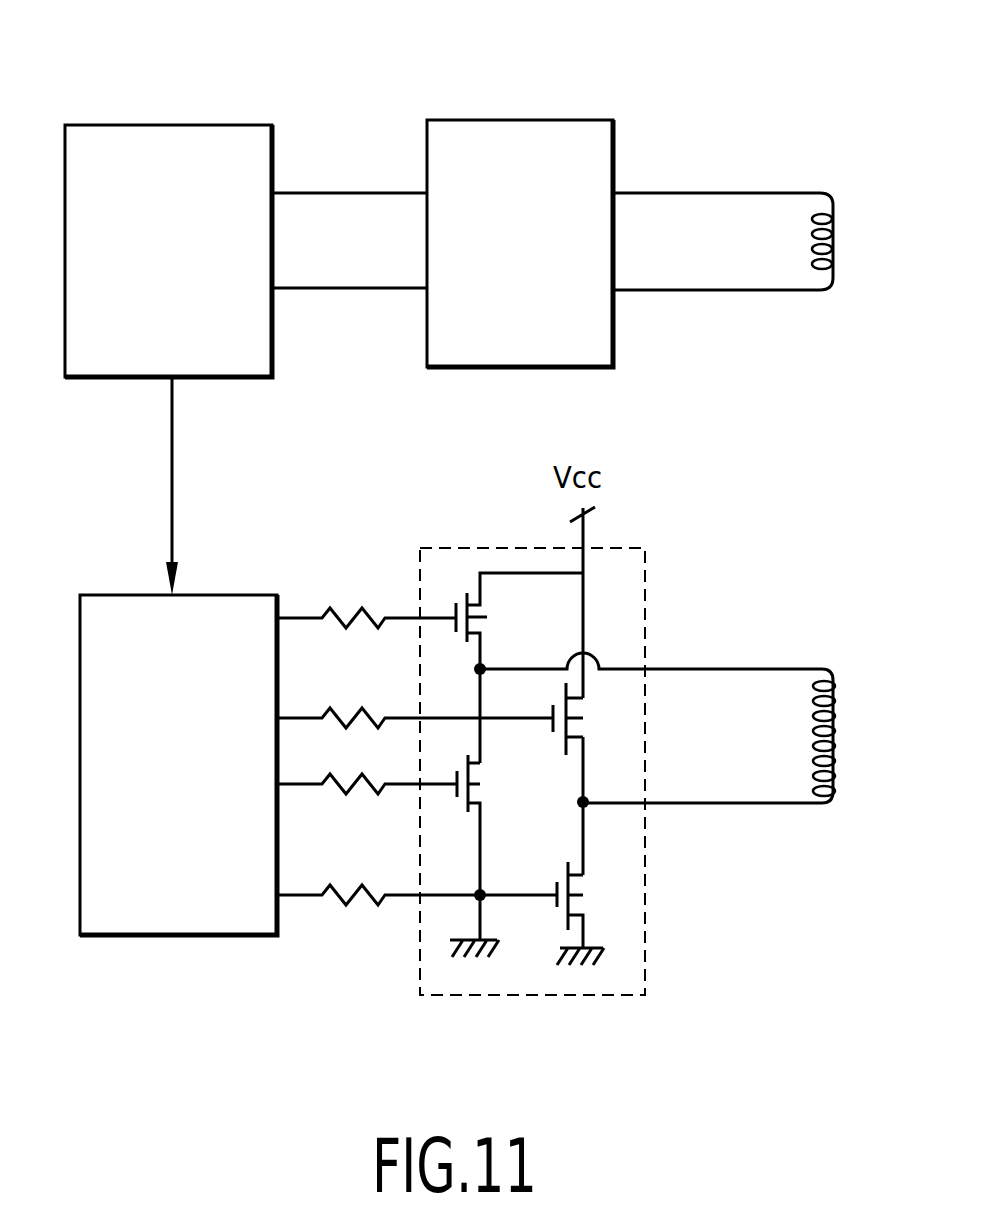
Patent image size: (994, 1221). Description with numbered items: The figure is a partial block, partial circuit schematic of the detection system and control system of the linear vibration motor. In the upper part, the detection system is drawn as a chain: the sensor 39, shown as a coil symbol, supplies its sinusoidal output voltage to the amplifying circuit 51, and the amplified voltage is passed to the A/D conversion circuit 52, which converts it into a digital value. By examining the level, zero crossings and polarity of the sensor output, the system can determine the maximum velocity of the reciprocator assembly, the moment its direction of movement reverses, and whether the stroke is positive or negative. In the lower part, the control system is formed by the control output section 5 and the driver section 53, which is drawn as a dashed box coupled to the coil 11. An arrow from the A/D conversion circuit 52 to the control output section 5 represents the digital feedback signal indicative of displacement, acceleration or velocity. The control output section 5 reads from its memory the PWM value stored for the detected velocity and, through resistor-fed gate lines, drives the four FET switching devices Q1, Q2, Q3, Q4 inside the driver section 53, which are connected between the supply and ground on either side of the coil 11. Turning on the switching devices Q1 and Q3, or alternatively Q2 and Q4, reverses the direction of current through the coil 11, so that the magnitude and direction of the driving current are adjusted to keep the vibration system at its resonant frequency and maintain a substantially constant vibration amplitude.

The A/D conversion circuit 52 is at (142, 125).
The amplifying circuit 51 is at (510, 120).
The sensor 39 is at (835, 242).
The control output section 5 is at (112, 595).
The driver section 53 is at (645, 592).
The coil 11 is at (835, 686).
The FET switching device Q1 is at (453, 585).
The FET switching device Q2 is at (603, 723).
The FET switching device Q3 is at (460, 827).
The FET switching device Q4 is at (598, 900).